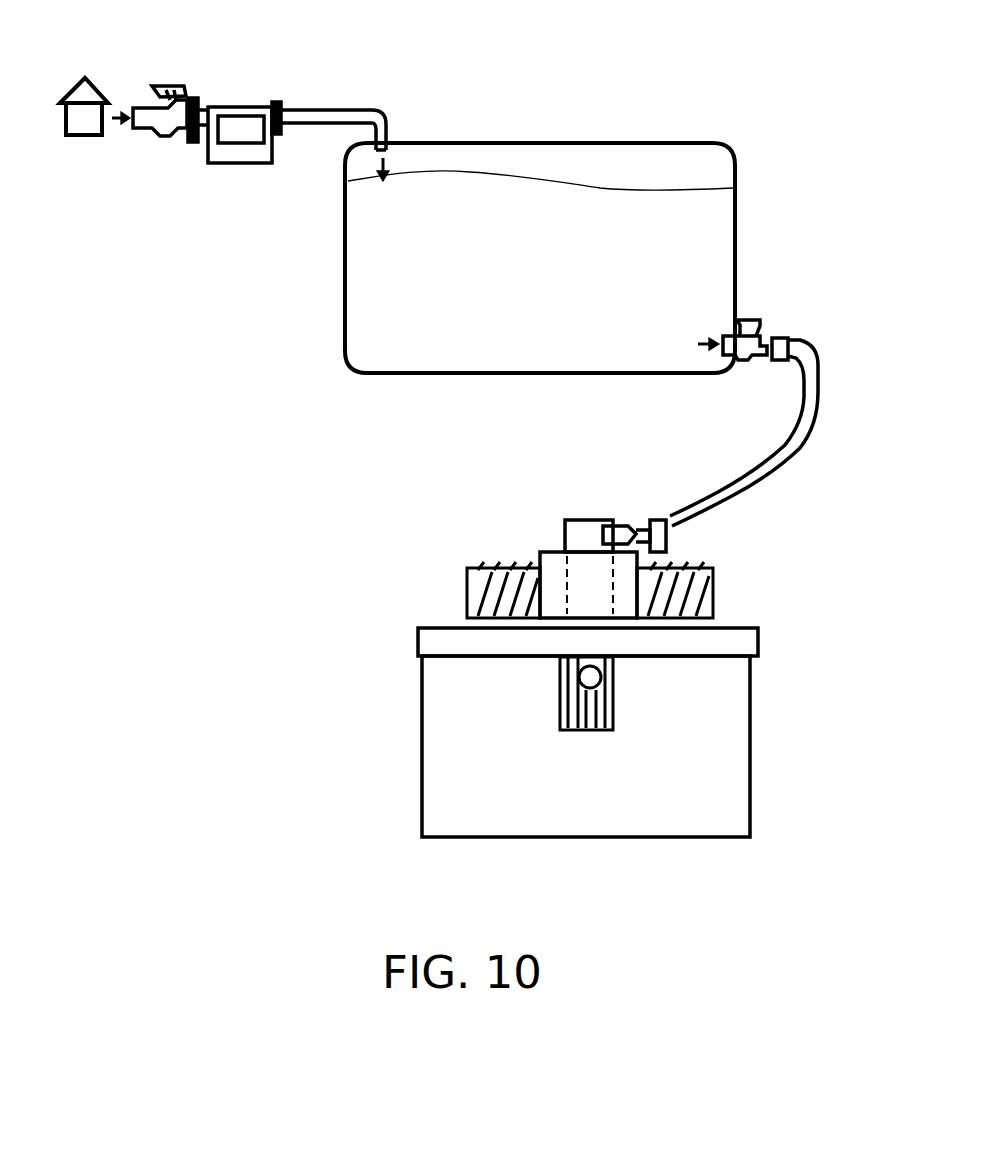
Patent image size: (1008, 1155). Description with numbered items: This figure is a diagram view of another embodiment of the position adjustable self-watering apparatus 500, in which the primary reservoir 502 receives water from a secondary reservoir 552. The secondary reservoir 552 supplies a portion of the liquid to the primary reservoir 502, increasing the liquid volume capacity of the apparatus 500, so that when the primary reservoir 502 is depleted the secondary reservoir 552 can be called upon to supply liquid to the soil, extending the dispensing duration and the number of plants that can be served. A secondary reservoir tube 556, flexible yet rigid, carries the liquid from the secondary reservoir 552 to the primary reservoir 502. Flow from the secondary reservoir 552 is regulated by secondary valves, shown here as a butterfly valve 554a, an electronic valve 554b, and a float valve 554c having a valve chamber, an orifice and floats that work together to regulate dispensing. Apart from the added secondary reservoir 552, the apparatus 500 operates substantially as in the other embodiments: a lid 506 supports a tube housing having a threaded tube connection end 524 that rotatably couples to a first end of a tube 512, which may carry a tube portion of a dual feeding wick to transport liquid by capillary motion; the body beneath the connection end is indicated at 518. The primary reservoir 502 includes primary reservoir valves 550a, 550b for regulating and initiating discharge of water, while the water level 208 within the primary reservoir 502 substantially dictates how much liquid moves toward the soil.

The position adjustable self-watering apparatus 500 is at (134, 413).
The primary reservoir 502 is at (420, 755).
The lid 506 is at (758, 645).
The tube 512 is at (558, 630).
The nozzle body 518 is at (572, 576).
The threaded tube connection end 524 is at (467, 596).
The primary reservoir valve 550a is at (578, 520).
The primary reservoir valve 550b is at (578, 730).
The secondary reservoir 552 is at (735, 155).
The butterfly valve 554a is at (175, 98).
The electronic valve 554b is at (235, 120).
The float valve 554c is at (760, 335).
The secondary reservoir tube 556 is at (732, 494).
The water level 208 is at (690, 668).